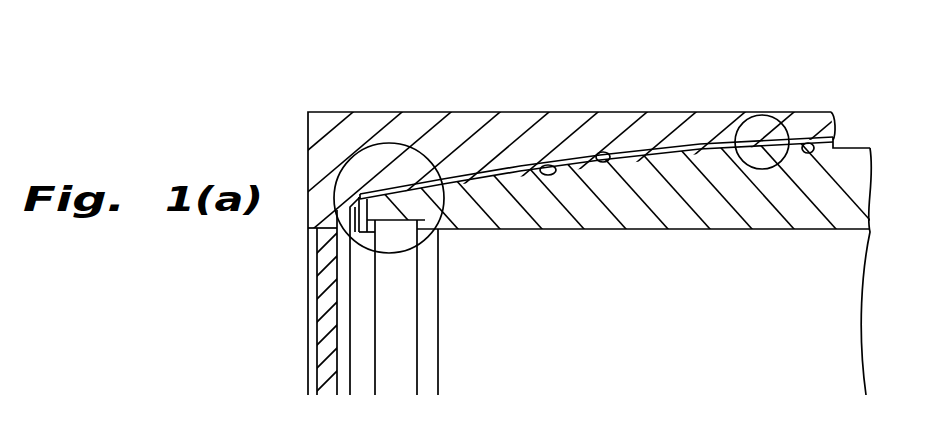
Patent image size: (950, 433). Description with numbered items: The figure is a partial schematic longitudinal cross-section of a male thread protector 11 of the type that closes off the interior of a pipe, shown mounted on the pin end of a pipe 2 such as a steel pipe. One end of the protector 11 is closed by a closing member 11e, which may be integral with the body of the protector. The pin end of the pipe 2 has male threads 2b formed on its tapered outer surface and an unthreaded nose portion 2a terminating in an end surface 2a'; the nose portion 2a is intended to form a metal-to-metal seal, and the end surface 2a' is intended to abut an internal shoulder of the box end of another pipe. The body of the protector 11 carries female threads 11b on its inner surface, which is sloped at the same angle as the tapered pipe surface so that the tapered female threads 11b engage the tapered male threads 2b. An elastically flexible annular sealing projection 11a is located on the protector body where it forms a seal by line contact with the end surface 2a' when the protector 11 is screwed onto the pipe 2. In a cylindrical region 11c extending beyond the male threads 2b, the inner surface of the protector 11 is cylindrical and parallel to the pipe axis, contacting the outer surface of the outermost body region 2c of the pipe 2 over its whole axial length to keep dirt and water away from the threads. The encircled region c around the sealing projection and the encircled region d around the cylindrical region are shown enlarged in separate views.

The male thread protector 11 is at (483, 115).
The sealing projection 11a is at (355, 240).
The female threads 11b is at (560, 165).
The cylindrical region 11c is at (770, 160).
The closing member 11e is at (317, 296).
The pipe 2 is at (633, 222).
The unthreaded nose portion 2a is at (373, 118).
The end surface 2a' is at (437, 296).
The male threads 2b is at (597, 166).
The outermost body region 2c is at (808, 153).
The region c is at (428, 150).
The region d is at (750, 128).